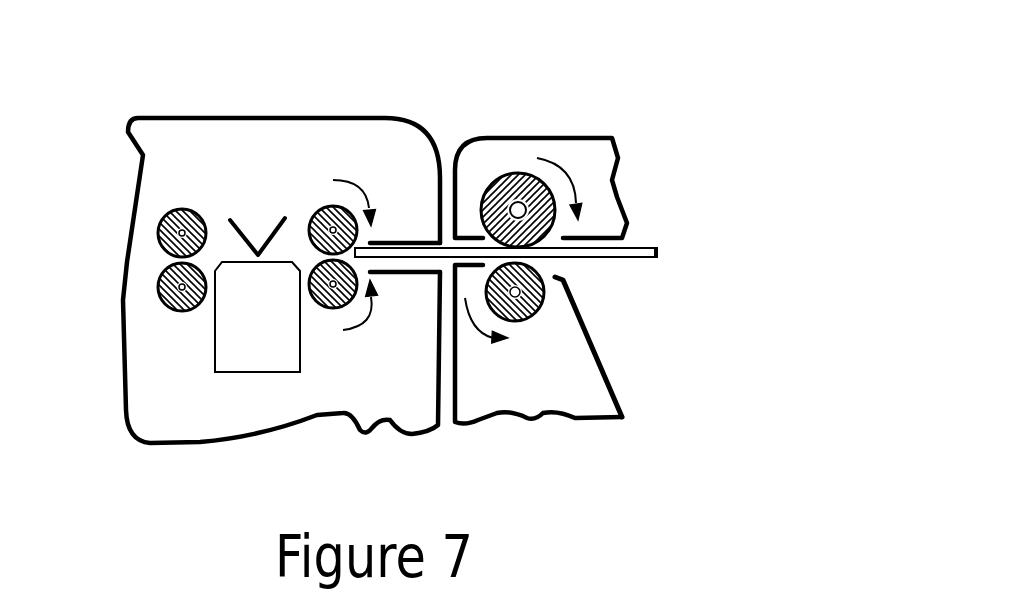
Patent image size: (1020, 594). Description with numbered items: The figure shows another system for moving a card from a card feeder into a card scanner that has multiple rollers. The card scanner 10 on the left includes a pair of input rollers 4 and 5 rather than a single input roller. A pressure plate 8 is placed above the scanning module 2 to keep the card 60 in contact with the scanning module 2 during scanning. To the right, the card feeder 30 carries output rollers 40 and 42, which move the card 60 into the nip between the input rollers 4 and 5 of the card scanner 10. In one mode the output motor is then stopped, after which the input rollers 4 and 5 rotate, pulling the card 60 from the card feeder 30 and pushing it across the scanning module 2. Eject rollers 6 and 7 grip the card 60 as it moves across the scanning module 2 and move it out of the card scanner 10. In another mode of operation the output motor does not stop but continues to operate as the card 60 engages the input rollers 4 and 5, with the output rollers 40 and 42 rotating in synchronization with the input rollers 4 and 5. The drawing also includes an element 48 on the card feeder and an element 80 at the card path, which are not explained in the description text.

The card scanner 10 is at (294, 87).
The card feeder 30 is at (586, 118).
The output roller 40 is at (506, 168).
The output roller 42 is at (538, 313).
The guide member 48 is at (610, 370).
The card 60 is at (643, 248).
The sheet 80 is at (665, 253).
The pressure plate 8 is at (237, 229).
The scanning module 2 is at (237, 347).
The input roller 4 is at (316, 212).
The input roller 5 is at (320, 309).
The eject roller 6 is at (157, 247).
The eject roller 7 is at (158, 304).